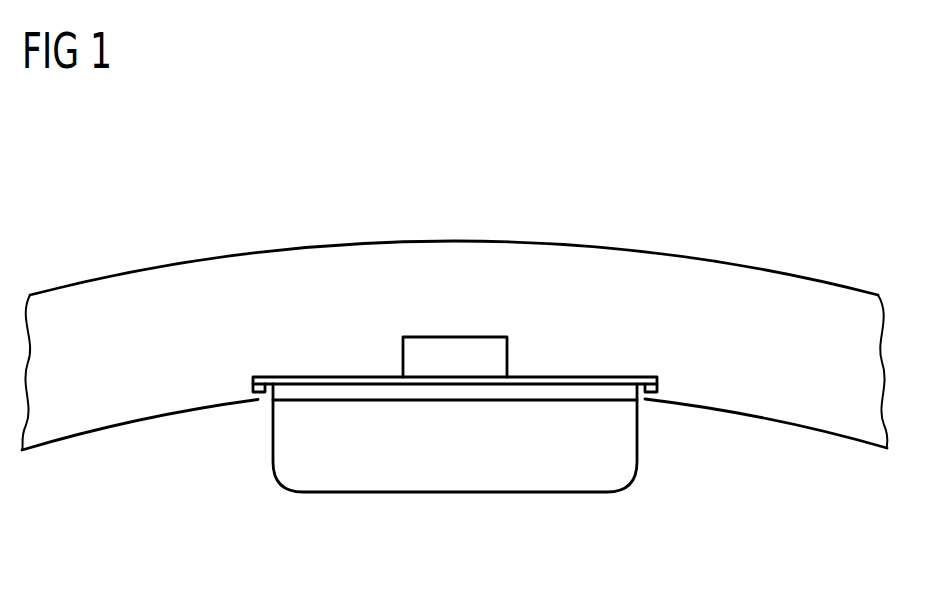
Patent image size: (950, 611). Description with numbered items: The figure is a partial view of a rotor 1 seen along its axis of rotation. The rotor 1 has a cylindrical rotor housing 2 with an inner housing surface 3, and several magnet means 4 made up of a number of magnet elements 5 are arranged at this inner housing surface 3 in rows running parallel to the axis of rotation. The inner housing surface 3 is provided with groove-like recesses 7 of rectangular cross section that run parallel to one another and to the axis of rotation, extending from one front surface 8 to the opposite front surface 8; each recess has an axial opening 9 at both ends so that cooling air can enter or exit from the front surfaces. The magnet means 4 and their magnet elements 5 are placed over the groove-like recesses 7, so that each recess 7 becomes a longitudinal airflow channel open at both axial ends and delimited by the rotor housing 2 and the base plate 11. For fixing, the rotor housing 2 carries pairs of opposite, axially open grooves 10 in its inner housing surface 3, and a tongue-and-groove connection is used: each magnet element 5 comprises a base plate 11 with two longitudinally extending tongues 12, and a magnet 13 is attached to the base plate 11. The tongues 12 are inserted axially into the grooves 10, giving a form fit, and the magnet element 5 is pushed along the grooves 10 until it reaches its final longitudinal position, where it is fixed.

The rotor 1 is at (757, 181).
The rotor housing 2 is at (598, 247).
The inner housing surface 3 is at (772, 421).
The magnet means 4 is at (632, 497).
The magnet element 5 is at (355, 520).
The groove-like recess 7 is at (426, 337).
The front surface 8 is at (838, 419).
The axial opening 9 is at (467, 347).
The groove 10 is at (250, 383).
The base plate 11 is at (553, 389).
The tongue 12 is at (267, 393).
The magnet 13 is at (425, 475).